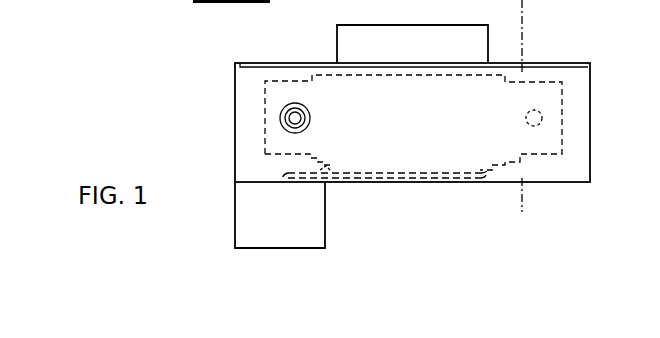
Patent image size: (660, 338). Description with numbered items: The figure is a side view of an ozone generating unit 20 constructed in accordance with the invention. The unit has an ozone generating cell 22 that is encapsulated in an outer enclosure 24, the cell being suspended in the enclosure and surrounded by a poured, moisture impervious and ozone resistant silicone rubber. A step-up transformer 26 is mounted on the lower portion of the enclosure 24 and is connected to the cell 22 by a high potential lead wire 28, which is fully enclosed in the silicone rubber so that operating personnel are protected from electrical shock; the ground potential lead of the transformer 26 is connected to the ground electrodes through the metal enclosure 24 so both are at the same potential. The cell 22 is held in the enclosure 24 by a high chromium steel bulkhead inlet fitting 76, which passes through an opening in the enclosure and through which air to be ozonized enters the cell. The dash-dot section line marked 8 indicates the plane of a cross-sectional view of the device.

The ozone generating unit 20 is at (183, 113).
The ozone generating cell 22 is at (258, 96).
The outer enclosure 24 is at (592, 119).
The step-up transformer 26 is at (245, 200).
The high potential lead wire 28 is at (442, 185).
The bulkhead inlet fitting 76 is at (282, 122).
The section line 8- 8 is at (512, 209).